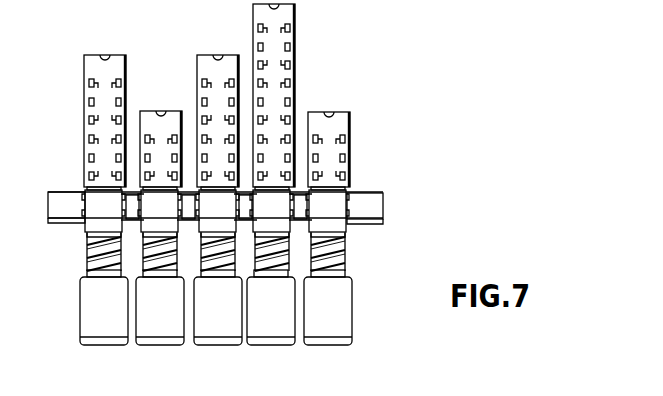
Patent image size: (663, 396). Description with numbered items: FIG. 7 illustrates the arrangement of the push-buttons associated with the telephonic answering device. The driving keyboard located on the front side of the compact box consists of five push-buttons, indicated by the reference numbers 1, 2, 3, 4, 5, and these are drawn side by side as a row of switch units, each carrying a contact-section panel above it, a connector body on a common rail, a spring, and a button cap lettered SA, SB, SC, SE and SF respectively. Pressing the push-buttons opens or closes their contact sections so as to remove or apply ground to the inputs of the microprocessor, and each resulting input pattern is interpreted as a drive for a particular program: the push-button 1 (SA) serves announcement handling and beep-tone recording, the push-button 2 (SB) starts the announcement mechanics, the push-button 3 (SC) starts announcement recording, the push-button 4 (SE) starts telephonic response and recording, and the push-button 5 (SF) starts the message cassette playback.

The push-button 1 is at (82, 327).
The push-button 2 is at (168, 333).
The push-button 3 is at (225, 329).
The push-button 4 is at (278, 330).
The push-button 5 is at (335, 330).